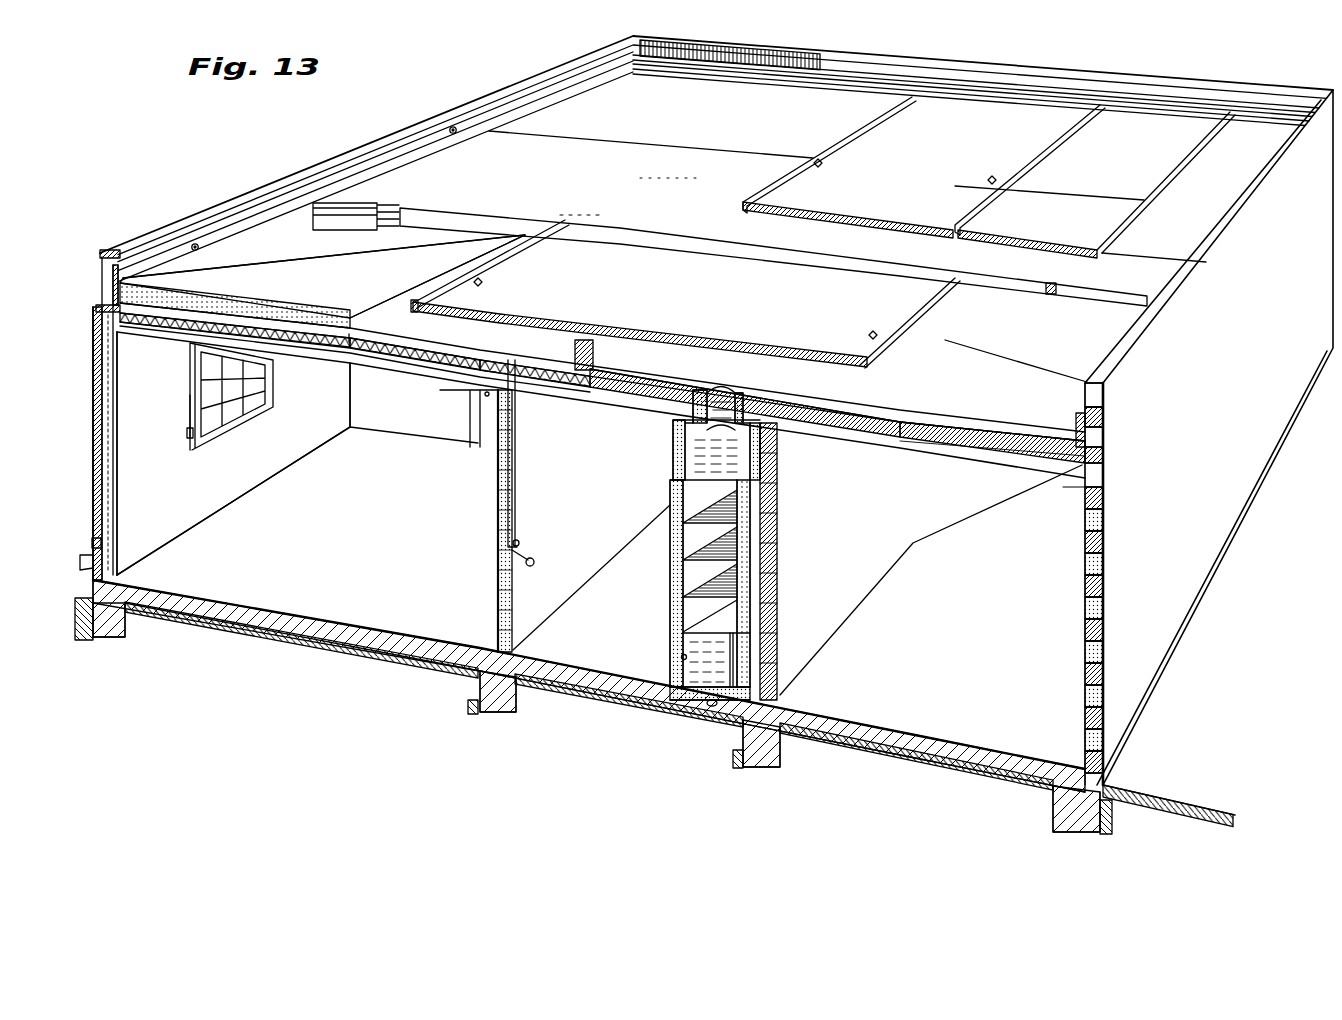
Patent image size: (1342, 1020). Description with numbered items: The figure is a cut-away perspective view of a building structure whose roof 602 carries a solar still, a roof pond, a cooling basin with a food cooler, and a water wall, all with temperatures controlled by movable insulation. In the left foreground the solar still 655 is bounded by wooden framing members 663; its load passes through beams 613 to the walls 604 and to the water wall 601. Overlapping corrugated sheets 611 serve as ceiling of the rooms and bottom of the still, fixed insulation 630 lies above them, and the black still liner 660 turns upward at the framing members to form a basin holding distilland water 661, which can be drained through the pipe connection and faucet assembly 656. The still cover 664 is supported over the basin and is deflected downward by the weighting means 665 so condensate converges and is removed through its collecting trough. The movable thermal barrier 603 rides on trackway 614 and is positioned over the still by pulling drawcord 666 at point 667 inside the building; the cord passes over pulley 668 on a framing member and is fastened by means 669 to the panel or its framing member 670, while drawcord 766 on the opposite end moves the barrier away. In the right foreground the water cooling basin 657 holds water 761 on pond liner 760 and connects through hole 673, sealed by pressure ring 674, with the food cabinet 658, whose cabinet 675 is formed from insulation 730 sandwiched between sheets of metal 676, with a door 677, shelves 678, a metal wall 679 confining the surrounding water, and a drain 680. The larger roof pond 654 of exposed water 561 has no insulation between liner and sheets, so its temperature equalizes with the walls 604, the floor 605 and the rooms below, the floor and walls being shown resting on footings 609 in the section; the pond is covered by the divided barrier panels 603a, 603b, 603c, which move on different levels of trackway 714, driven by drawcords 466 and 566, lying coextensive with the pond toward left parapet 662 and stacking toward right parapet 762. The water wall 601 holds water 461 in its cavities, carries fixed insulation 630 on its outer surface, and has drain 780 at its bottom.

The water 461 is at (106, 470).
The drawcord 466 is at (547, 135).
The water 561 is at (577, 205).
The drawcord 566 is at (1095, 190).
The wall 601 is at (112, 478).
The roof 602 is at (422, 364).
The movable thermal barrier 603 is at (694, 292).
The panel 603a is at (998, 135).
The panel 603b is at (1121, 162).
The panel 603c is at (1238, 185).
The walls 604 is at (403, 433).
The floor 605 is at (268, 615).
The footing 609 is at (495, 712).
The sheets 611 is at (458, 380).
The beams 613 is at (928, 452).
The trackway 614 is at (458, 226).
The fixed insulation 630 is at (308, 352).
The roof pond 654 is at (686, 204).
The solar still 655 is at (284, 292).
The pipe connection and faucet assembly 656 is at (523, 544).
The water cooling basin 657 is at (914, 398).
The food cabinet 658 is at (670, 498).
The still liner 660 is at (160, 326).
The water 661 is at (203, 303).
The left parapet 662 is at (562, 68).
The framing members 663 is at (140, 265).
The still cover 664 is at (316, 308).
The weighting means 665 is at (350, 334).
The drawcord 666 is at (330, 255).
The point 667 is at (192, 440).
The pulley 668 is at (450, 128).
The means 669 is at (821, 166).
The framing member 670 is at (962, 222).
The hole 673 is at (692, 410).
The pressure ring 674 is at (740, 390).
The cabinet 675 is at (672, 460).
The sheets of metal 676 is at (682, 658).
The door 677 is at (672, 600).
The shelves 678 is at (690, 548).
The metal wall 679 is at (752, 478).
The drain 680 is at (713, 706).
The trackway 714 is at (776, 72).
The insulation 730 is at (778, 527).
The pond liner 760 is at (935, 419).
The water 761 is at (665, 358).
The right parapet 762 is at (1087, 381).
The drawcord 766 is at (984, 349).
The drain 780 is at (100, 541).